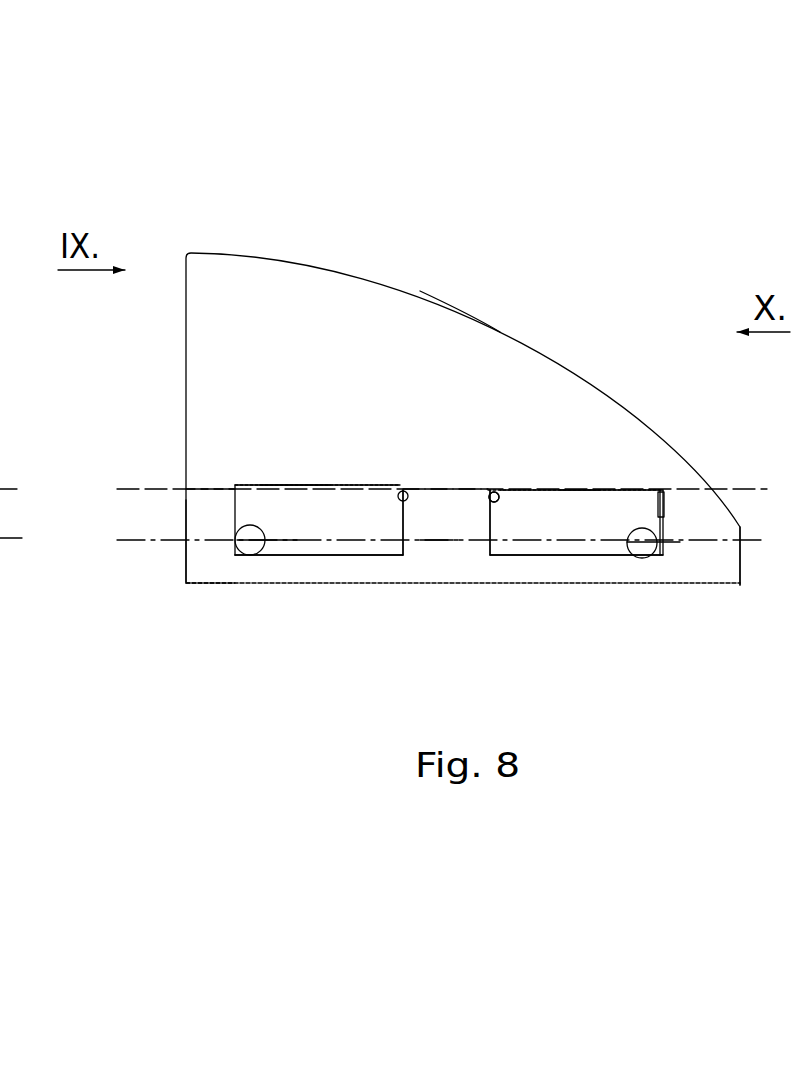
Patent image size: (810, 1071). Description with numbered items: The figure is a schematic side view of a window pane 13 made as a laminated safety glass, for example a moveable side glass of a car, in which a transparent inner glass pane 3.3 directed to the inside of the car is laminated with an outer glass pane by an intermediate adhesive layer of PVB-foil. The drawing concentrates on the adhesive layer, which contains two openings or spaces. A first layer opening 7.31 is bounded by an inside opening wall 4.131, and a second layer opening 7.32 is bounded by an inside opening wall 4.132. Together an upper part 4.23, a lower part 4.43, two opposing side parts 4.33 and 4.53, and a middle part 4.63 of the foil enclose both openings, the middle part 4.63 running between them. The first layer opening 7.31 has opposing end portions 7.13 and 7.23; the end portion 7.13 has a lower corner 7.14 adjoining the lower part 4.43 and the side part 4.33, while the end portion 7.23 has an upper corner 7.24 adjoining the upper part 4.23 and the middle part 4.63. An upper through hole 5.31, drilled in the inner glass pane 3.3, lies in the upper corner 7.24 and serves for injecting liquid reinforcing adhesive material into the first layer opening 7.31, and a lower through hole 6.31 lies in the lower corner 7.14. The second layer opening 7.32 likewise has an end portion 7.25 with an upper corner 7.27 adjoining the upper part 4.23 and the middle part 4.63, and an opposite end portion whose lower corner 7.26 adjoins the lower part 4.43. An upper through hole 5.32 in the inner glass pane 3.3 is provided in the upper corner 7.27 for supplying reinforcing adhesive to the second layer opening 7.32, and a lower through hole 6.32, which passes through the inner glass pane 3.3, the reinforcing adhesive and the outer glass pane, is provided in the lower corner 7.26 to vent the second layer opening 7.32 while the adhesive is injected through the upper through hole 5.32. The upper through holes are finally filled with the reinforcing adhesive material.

The window pane 13 is at (286, 250).
The upper corner 7.24 is at (409, 488).
The upper part 4.23 is at (459, 344).
The end portion 7.23 is at (433, 497).
The upper corner 7.27 is at (485, 488).
The second layer opening 7.32 is at (553, 515).
The inside opening wall 4.132 is at (583, 490).
The first layer opening 7.31 is at (288, 518).
The side part 4.33 is at (204, 507).
The inner glass pane 3.3 is at (216, 558).
The end portion 7.13 is at (232, 515).
The lower corner 7.14 is at (232, 568).
The lower through hole 6.31 is at (253, 545).
The inside opening wall 4.131 is at (322, 557).
The upper through hole 5.31 is at (403, 505).
The middle part 4.63 is at (439, 507).
The end portion 7.25 is at (490, 497).
The upper through hole 5.32 is at (495, 505).
The lower part 4.43 is at (563, 570).
The lower through hole 6.32 is at (643, 550).
The lower corner 7.26 is at (663, 557).
The side part 4.53 is at (684, 520).